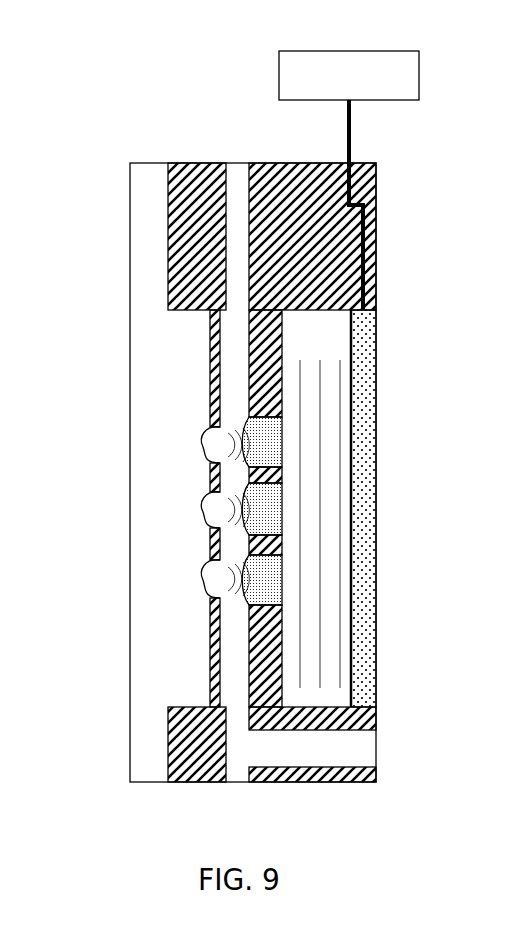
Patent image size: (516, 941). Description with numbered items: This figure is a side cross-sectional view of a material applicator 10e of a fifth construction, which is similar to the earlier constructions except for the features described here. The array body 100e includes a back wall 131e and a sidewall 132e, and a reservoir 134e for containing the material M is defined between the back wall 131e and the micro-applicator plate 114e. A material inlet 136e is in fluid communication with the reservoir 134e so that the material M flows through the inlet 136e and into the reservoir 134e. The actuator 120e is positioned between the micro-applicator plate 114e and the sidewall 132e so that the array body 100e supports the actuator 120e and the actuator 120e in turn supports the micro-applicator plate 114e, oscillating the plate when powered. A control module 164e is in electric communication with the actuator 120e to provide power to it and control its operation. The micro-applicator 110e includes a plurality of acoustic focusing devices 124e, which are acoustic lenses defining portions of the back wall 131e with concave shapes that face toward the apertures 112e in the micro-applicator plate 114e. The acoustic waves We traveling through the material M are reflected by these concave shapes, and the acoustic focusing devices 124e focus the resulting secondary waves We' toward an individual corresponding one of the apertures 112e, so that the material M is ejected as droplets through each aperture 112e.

The material applicator 10e is at (150, 168).
The array body 100e is at (206, 158).
The micro-applicator 110e is at (180, 658).
The apertures 112e is at (210, 428).
The micro-applicator plate 114e is at (203, 363).
The actuator 120e is at (368, 353).
The acoustic focusing devices 124e is at (275, 428).
The back wall 131e is at (252, 650).
The sidewall 132e is at (201, 306).
The reservoir 134e is at (232, 353).
The material inlet 136e is at (347, 741).
The control module 164e is at (279, 72).
The acoustic waves We is at (394, 597).
The secondary waves We' is at (358, 567).
The material M is at (242, 750).